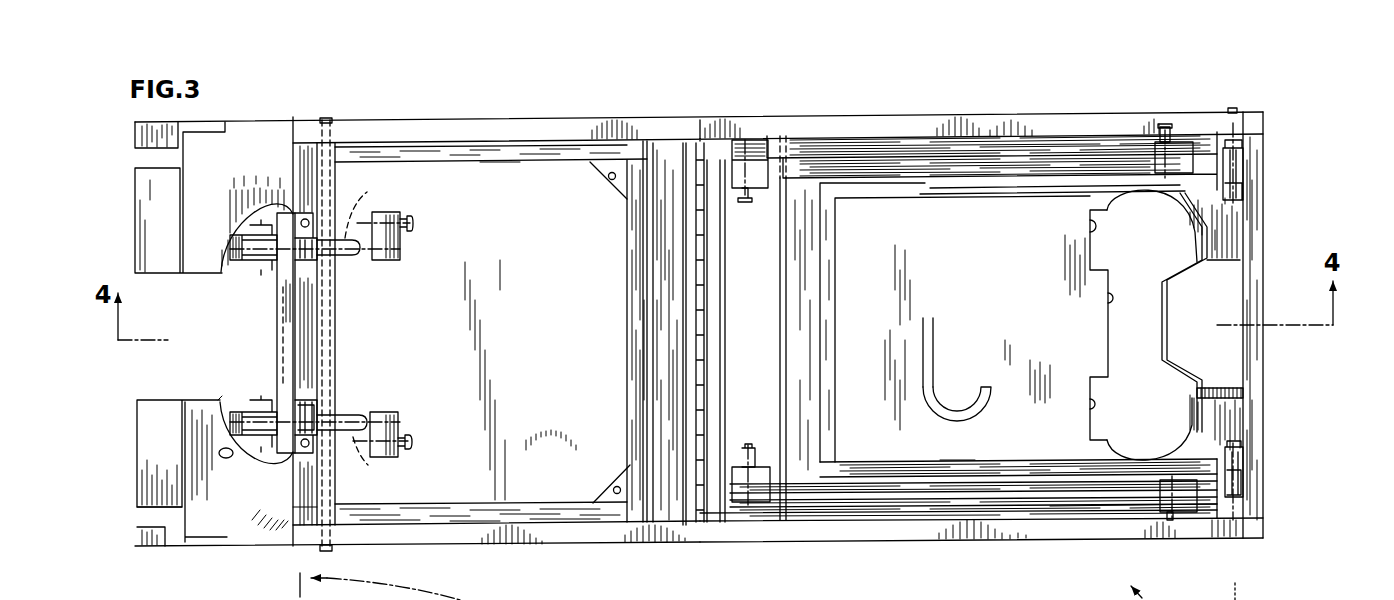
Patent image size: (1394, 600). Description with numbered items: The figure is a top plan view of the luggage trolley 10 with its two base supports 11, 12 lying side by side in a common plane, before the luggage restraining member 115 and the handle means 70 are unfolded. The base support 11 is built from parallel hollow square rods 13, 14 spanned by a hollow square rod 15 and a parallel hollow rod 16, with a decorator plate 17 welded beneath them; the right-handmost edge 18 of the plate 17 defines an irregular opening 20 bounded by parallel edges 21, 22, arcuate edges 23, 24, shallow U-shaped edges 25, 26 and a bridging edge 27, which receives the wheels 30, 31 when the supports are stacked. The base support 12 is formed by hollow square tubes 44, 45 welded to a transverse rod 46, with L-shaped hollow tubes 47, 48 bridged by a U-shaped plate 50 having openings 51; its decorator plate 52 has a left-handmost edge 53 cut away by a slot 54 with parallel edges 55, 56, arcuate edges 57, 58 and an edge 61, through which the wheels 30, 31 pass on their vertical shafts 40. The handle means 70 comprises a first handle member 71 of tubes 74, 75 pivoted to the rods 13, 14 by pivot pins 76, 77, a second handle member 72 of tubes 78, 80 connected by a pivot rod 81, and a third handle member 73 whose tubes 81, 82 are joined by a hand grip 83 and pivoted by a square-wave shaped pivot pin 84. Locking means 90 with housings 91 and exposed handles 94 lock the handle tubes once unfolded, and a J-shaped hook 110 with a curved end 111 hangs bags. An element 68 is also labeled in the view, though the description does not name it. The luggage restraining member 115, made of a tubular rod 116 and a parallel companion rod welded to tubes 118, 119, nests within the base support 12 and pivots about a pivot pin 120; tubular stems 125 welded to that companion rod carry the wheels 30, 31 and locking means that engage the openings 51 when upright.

The luggage trolley 10 is at (1322, 173).
The base support 11 is at (977, 541).
The base support 12 is at (590, 115).
The hollow square rod 13 is at (778, 538).
The hollow square rod 14 is at (943, 119).
The hollow square rod 15 is at (1257, 195).
The hollow rod 16 is at (702, 318).
The decorator plate 17 is at (995, 335).
The right-handmost edge 18 is at (1227, 220).
The opening 20 is at (1130, 327).
The parallel edge 21 is at (1225, 262).
The parallel edge 22 is at (1210, 388).
The arcuate edge 23 is at (1177, 202).
The arcuate edge 24 is at (1123, 453).
The U-shaped edge 25 is at (1092, 230).
The U-shaped edge 26 is at (1093, 403).
The edge 27 is at (1110, 297).
The wheel 30 is at (237, 410).
The wheel 31 is at (235, 257).
The vertical shaft 40 is at (375, 330).
The hollow square tube 44 is at (495, 123).
The hollow square tube 45 is at (610, 537).
The transverse rod 46 is at (690, 343).
The L-shaped hollow tube 47 is at (297, 148).
The L-shaped hollow tube 48 is at (300, 508).
The U-shaped plate 50 is at (282, 348).
The opening 51 is at (305, 223).
The decorator plate 52 is at (520, 380).
The left-handmost edge 53 is at (207, 523).
The slot 54 is at (160, 367).
The edge 55 is at (197, 273).
The edge 56 is at (198, 400).
The arcuate edge 57 is at (230, 217).
The arcuate edge 58 is at (223, 453).
The edge 61 is at (280, 323).
The guide rail 68 is at (735, 341).
The handle means 70 is at (857, 140).
The first handle member 71 is at (1057, 521).
The second handle member 72 is at (917, 501).
The third handle member 73 is at (957, 455).
The hollow tube 74 is at (1082, 140).
The hollow tube 75 is at (1123, 510).
The pivot pin 76 is at (1232, 538).
The pivot pin 77 is at (1232, 110).
The hollow rectangular tube 78 is at (1062, 167).
The hollow rectangular tube 80 is at (1013, 487).
The pivot rod 81 is at (1005, 194).
The square tube 82 is at (880, 467).
The hand grip 83 is at (835, 370).
The pivot pin 84 is at (1160, 320).
The locking means 90 is at (400, 260).
The housing 91 is at (1197, 497).
The handle 94 is at (740, 193).
The J-shaped hook 110 is at (931, 318).
The curved end 111 is at (966, 412).
The luggage restraining member 115 is at (623, 328).
The tubular rod 116 is at (638, 228).
The tube 118 is at (507, 159).
The tube 119 is at (535, 505).
The pivot pin 120 is at (327, 118).
The tubular stem 125 is at (353, 257).